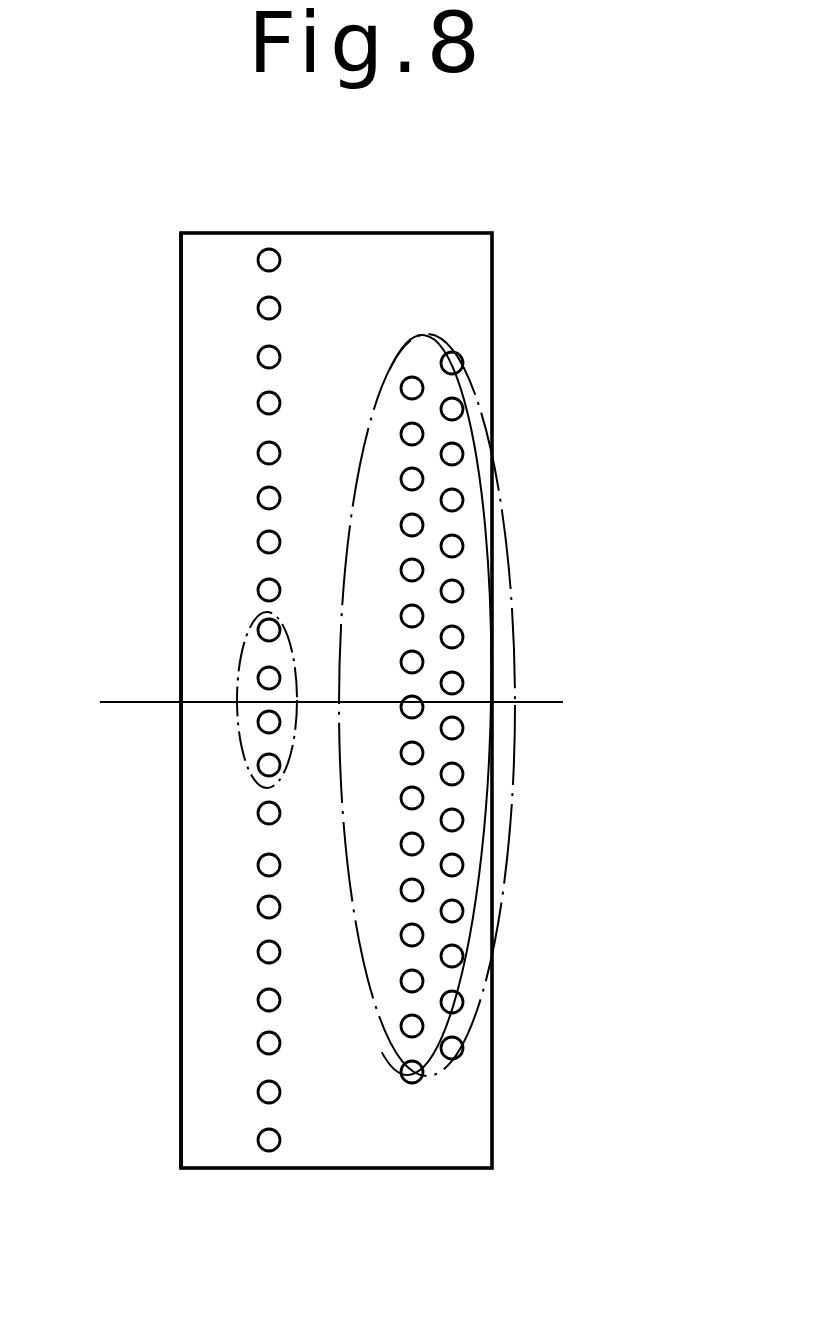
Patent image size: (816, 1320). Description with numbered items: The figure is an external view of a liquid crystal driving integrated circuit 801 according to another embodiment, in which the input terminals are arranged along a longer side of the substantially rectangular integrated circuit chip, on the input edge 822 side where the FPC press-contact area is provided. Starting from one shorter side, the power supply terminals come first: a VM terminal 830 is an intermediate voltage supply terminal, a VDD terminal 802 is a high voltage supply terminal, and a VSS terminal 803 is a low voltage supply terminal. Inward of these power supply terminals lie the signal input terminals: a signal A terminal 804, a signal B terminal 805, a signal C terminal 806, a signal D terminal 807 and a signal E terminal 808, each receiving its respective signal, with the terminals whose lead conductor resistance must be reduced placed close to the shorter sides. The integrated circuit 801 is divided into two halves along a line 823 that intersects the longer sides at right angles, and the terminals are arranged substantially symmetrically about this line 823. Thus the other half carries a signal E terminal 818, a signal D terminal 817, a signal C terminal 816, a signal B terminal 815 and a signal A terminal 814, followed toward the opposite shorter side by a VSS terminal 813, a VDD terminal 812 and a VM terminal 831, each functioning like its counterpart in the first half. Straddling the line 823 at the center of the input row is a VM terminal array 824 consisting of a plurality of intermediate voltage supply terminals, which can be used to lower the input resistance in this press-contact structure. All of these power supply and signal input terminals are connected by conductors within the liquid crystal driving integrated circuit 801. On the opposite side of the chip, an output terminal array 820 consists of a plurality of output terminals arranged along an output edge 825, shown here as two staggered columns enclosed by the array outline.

The liquid crystal driving integrated circuit 801 is at (420, 234).
The VDD terminal 802 is at (259, 303).
The VSS terminal 803 is at (259, 351).
The signal A terminal 804 is at (259, 398).
The signal B terminal 805 is at (259, 448).
The signal C terminal 806 is at (259, 493).
The signal D terminal 807 is at (259, 537).
The signal E terminal 808 is at (259, 585).
The VDD terminal 812 is at (259, 1100).
The VSS terminal 813 is at (259, 1051).
The signal A terminal 814 is at (259, 1008).
The signal B terminal 815 is at (259, 960).
The signal C terminal 816 is at (259, 915).
The signal D terminal 817 is at (259, 873).
The signal E terminal 818 is at (259, 821).
The output terminal array 820 is at (505, 553).
The input edge 822 is at (181, 747).
The line 823 is at (522, 702).
The VM terminal array 824 is at (240, 666).
The output edge 825 is at (493, 851).
The VM terminal 830 is at (259, 256).
The VM terminal 831 is at (263, 1152).